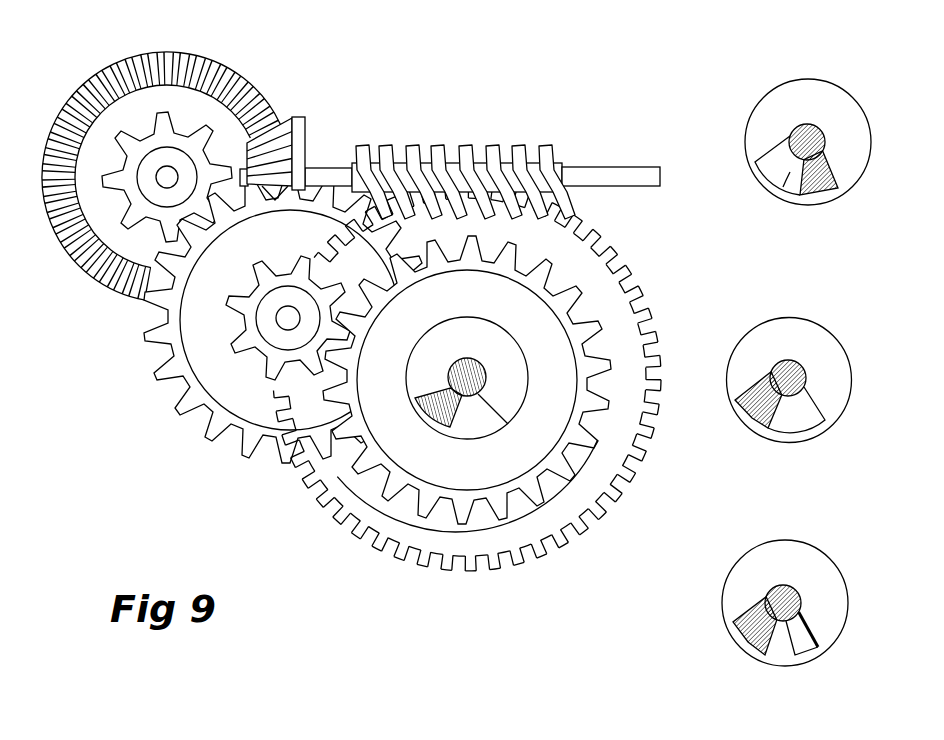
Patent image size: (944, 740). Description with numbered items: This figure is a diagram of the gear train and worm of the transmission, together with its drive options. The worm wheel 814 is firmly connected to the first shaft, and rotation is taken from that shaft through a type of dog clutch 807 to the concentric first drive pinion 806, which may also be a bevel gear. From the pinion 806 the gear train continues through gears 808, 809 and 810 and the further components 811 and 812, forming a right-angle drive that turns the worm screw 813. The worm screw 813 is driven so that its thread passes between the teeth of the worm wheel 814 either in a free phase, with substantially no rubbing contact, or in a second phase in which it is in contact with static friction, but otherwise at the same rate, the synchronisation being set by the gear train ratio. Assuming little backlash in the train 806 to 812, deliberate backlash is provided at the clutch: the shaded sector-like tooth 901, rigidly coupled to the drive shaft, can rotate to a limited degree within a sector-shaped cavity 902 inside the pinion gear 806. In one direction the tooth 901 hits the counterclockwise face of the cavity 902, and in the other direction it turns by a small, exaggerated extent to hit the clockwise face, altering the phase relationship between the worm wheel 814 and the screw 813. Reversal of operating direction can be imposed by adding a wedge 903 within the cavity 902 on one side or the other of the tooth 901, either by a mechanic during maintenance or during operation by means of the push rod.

The first drive pinion 806 is at (327, 510).
The dog clutch 807 is at (563, 399).
The gear train gear 808 is at (178, 352).
The gear train gear 809 is at (247, 450).
The gear train gear 810 is at (106, 283).
The gear train component 811 is at (238, 72).
The gear train component 812 is at (297, 117).
The worm screw 813 is at (356, 147).
The worm wheel 814 is at (533, 547).
The tooth 901 is at (437, 430).
The sector-shaped cavity 902 is at (478, 418).
The wedge 903 is at (807, 655).